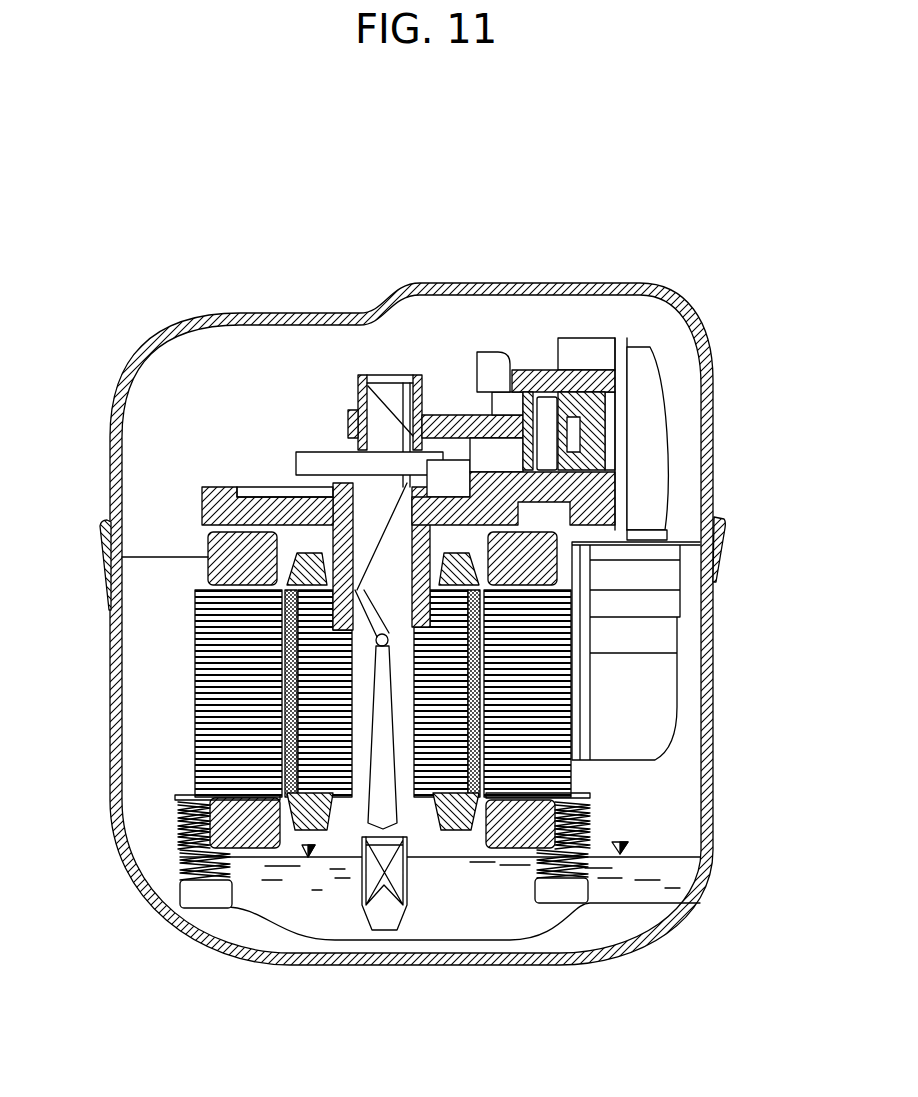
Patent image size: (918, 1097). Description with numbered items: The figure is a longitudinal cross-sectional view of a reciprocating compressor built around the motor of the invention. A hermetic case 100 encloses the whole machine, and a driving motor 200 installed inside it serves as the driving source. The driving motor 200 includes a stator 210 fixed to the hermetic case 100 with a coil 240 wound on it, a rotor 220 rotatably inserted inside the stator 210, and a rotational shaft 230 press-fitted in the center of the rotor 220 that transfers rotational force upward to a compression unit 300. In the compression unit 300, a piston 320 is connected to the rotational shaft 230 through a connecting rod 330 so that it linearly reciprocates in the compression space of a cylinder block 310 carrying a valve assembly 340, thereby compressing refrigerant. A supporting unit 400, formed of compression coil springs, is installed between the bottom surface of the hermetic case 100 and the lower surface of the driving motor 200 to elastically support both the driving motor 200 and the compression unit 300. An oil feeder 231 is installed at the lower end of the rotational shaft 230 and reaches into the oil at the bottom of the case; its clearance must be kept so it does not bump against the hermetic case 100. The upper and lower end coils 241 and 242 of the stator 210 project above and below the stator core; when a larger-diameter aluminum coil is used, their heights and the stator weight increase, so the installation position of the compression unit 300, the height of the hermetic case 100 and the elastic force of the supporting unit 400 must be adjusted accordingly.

The hermetic case 100 is at (170, 352).
The driving motor 200 is at (304, 690).
The stator 210 is at (210, 652).
The rotor 220 is at (305, 738).
The rotational shaft 230 is at (372, 518).
The oil feeder 231 is at (400, 925).
The coil 240 is at (247, 852).
The upper end coil 241 is at (223, 575).
The lower end coil 242 is at (180, 857).
The compression unit 300 is at (548, 381).
The cylinder block 310 is at (602, 500).
The piston 320 is at (593, 458).
The connecting rod 330 is at (508, 427).
The valve assembly 340 is at (618, 395).
The supporting unit 400 is at (418, 863).